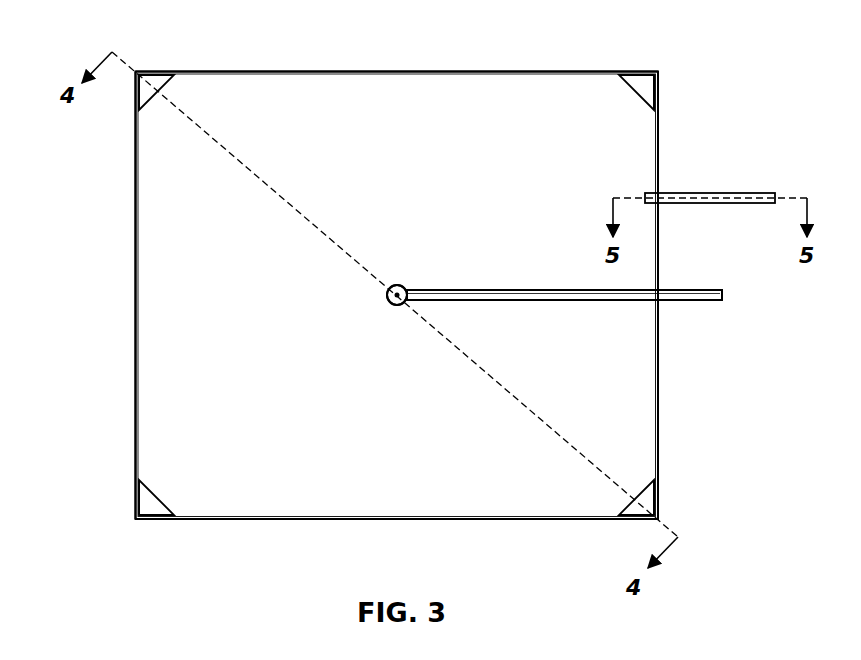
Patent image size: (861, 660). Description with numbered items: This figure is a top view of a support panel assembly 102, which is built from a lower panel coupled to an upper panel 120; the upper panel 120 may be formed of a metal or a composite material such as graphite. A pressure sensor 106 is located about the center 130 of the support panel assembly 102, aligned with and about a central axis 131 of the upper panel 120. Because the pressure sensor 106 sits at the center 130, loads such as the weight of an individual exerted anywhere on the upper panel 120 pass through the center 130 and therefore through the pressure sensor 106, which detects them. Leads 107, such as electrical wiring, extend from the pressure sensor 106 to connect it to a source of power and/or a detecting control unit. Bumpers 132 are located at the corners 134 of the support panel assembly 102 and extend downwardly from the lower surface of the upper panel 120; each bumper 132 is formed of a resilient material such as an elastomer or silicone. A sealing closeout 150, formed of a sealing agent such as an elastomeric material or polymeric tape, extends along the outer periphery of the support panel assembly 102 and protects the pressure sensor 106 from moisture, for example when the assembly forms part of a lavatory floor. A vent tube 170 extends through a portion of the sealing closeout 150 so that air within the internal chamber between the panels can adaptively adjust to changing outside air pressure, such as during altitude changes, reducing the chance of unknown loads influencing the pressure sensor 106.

The support panel assembly 102 is at (135, 41).
The pressure sensor 106 is at (390, 288).
The leads 107 is at (642, 288).
The upper panel 120 is at (515, 110).
The center 130 is at (406, 283).
The central axis 131 is at (387, 300).
The bumpers 132 is at (148, 93).
The corners 134 is at (157, 71).
The sealing closeout 150 is at (397, 70).
The vent tube 170 is at (708, 192).